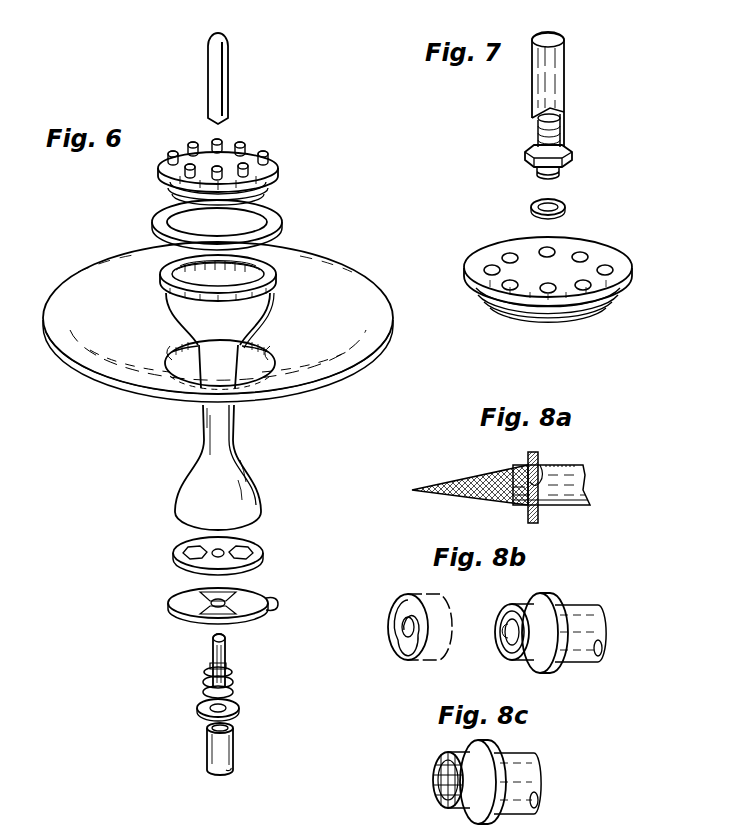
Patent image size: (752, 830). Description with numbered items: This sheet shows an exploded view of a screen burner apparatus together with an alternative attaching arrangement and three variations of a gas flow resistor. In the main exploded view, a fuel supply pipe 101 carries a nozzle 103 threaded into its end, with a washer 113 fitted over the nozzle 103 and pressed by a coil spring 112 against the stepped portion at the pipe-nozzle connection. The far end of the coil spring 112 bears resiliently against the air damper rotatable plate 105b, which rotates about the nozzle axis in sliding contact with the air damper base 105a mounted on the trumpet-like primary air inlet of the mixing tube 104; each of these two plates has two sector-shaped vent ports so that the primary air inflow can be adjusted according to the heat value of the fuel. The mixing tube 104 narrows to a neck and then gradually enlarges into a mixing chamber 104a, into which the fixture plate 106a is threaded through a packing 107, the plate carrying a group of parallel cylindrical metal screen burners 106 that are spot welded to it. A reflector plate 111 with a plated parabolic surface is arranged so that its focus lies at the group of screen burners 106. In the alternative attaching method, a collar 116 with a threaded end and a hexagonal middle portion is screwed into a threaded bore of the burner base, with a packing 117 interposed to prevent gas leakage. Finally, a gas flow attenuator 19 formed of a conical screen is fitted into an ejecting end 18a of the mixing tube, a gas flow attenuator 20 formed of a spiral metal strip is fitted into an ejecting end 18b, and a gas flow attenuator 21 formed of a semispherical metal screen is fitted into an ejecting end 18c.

In FIG. 6, the cylindrical metal screen burner 106 is at (219, 70).
In FIG. 7, the cylindrical metal screen burner 106 is at (535, 89).
In FIG. 6, the fixture plate (cylindrical screen burner base) 106a is at (262, 177).
In FIG. 7, the fixture plate (cylindrical screen burner base) 106a is at (523, 247).
In FIG. 6, the packing 107 is at (275, 218).
In FIG. 6, the reflector plate 111 is at (125, 364).
In FIG. 6, the mixing chamber 104a is at (178, 308).
In FIG. 6, the mixing tube 104 is at (230, 418).
In FIG. 6, the air damper base 105a is at (256, 547).
In FIG. 6, the air damper rotatable plate 105b is at (272, 596).
In FIG. 6, the nozzle 103 is at (213, 655).
In FIG. 6, the coil spring 112 is at (236, 686).
In FIG. 6, the washer 113 is at (200, 706).
In FIG. 6, the fuel supply pipe 101 is at (207, 749).
In FIG. 7, the collar 116 is at (540, 142).
In FIG. 7, the packing 117 is at (621, 160).
In FIG. 8A, the gas flow attenuator 19 is at (480, 480).
In FIG. 8A, the ejecting end of the mixing tube 18a is at (578, 472).
In FIG. 8B, the gas flow attenuator 20 is at (498, 615).
In FIG. 8B, the ejecting end of the mixing tube 18b is at (595, 612).
In FIG. 8C, the gas flow attenuator 21 is at (438, 777).
In FIG. 8C, the ejecting end of the mixing tube 18c is at (536, 772).